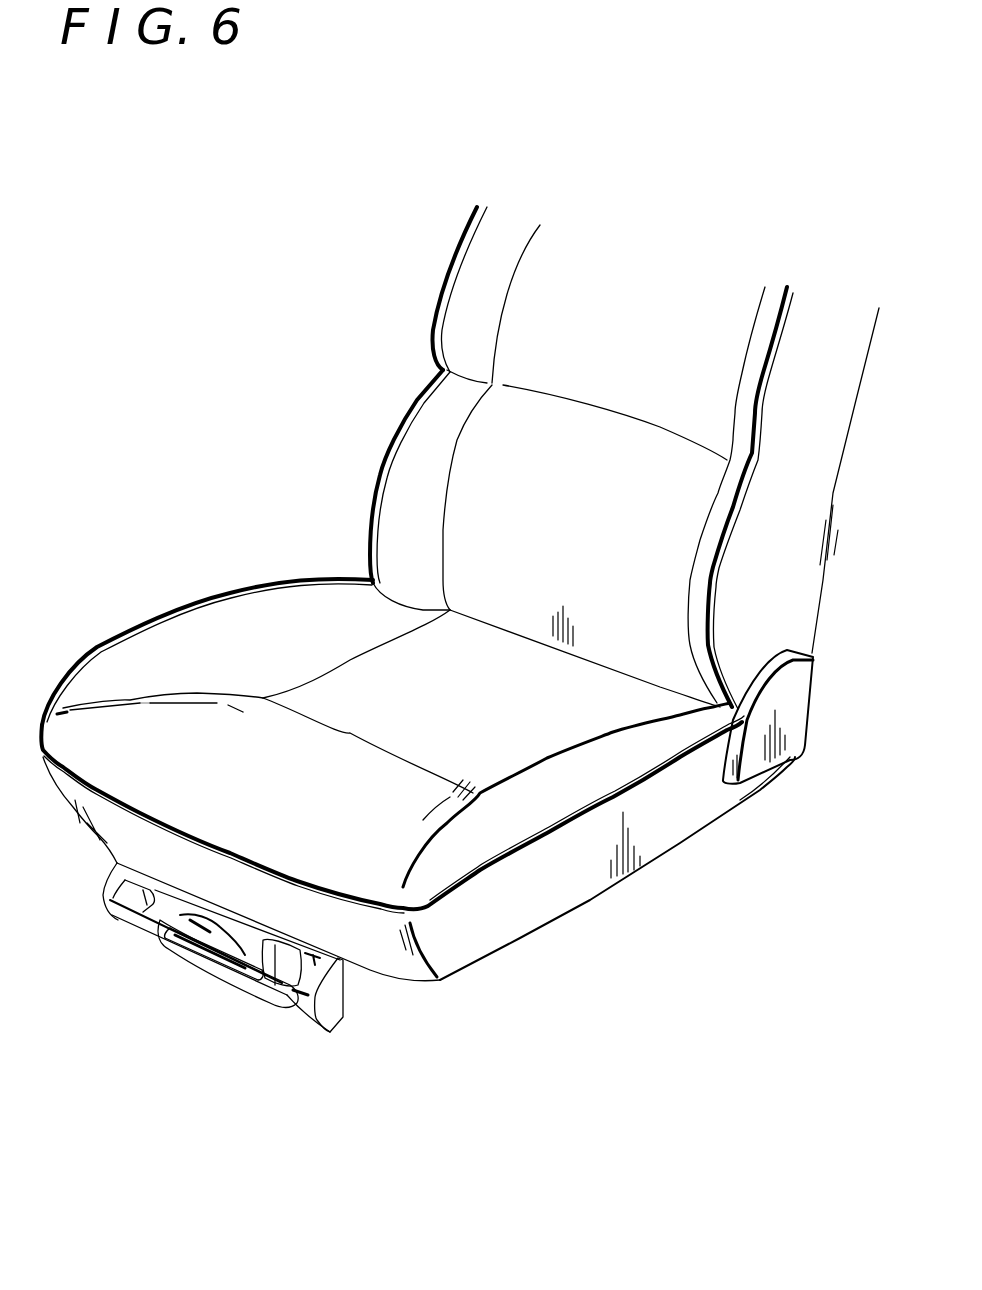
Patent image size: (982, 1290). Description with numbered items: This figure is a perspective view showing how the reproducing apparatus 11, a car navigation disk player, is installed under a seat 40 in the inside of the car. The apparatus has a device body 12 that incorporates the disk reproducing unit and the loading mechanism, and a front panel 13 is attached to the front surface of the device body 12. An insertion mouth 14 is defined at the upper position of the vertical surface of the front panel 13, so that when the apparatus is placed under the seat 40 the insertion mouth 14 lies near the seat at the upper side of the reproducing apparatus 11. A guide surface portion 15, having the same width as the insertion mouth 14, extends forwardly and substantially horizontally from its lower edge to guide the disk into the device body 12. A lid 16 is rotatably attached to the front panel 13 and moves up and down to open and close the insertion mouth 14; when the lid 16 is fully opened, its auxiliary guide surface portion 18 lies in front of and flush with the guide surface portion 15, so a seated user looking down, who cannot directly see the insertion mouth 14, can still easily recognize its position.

The seat 40 is at (245, 630).
The device body 12 is at (373, 997).
The front panel 13 is at (310, 1020).
The insertion mouth 14 is at (238, 930).
The guide surface portion 15 is at (178, 915).
The lid 16 is at (255, 993).
The auxiliary guide surface portion 18 is at (128, 935).
The reproducing apparatus 11 is at (197, 977).